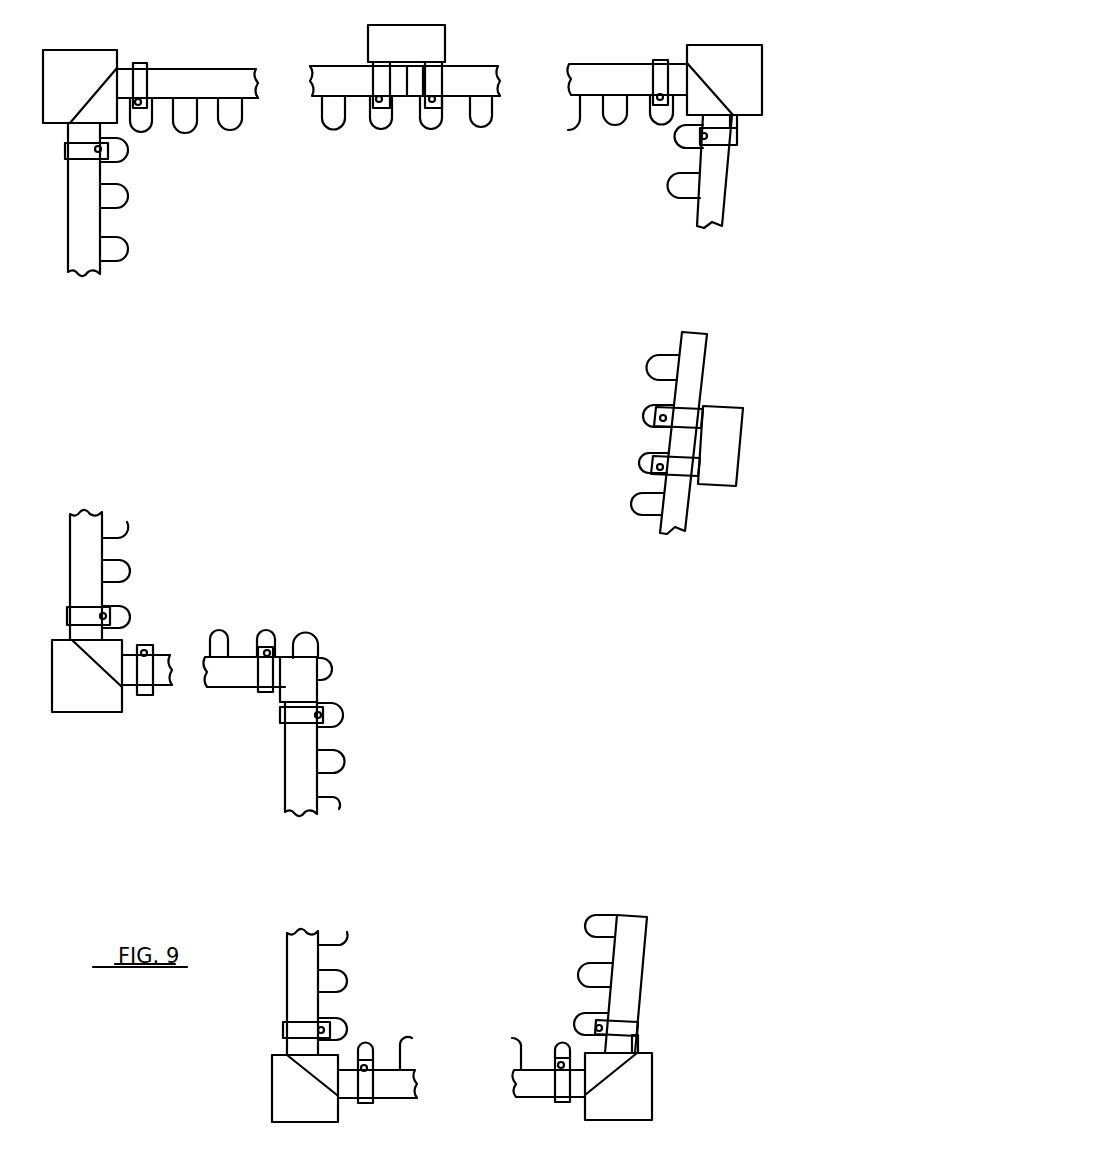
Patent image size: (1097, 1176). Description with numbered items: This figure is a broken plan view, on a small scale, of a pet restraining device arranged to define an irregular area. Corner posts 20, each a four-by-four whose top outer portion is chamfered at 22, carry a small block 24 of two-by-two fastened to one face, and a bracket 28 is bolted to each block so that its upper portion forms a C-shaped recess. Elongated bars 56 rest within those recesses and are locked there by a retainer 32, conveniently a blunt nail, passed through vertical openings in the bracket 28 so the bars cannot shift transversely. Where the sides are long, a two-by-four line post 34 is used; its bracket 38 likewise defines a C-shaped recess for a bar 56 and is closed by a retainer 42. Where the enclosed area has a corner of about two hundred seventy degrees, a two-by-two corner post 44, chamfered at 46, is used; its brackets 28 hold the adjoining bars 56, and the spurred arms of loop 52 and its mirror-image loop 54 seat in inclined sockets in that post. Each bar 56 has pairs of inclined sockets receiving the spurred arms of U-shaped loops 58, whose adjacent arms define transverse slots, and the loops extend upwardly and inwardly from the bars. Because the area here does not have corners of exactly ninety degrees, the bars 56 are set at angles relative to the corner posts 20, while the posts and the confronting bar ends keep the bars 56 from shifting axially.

The corner post 20 is at (739, 127).
The chamfer 22 is at (53, 92).
The small block 24 is at (95, 111).
The bracket 28 is at (140, 73).
The retainer 32 is at (138, 108).
The line post 34 is at (407, 28).
The bracket 38 is at (437, 78).
The retainer 42 is at (432, 102).
The corner post 44 is at (293, 695).
The chamfer 46 is at (313, 660).
The loop 52 is at (334, 670).
The loop 54 is at (333, 88).
The elongated bar 56 is at (717, 208).
The U-shaped loop 58 is at (232, 131).